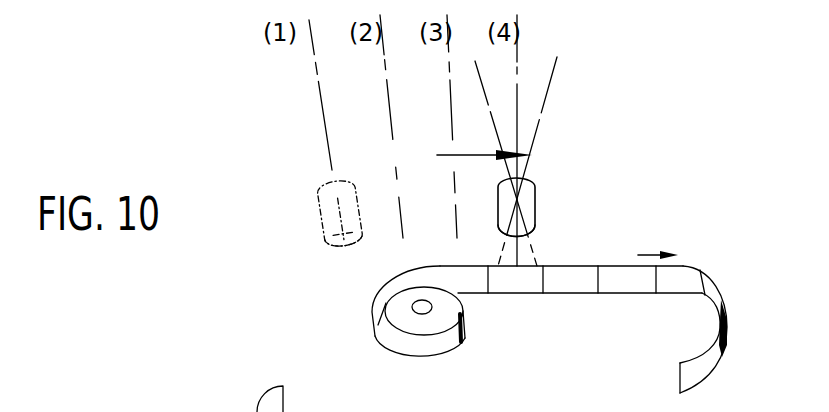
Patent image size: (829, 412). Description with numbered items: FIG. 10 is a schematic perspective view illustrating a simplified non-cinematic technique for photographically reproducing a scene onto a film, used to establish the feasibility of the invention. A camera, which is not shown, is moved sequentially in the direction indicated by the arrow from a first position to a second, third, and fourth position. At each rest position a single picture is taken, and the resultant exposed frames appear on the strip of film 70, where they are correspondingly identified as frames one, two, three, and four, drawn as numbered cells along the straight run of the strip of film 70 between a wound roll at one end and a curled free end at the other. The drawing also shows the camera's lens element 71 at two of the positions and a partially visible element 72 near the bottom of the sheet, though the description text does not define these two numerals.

The strip of film 70 is at (725, 335).
The recording head (shown in two positions) 71 is at (322, 207).
The take-up element (partially shown) 72 is at (423, 411).